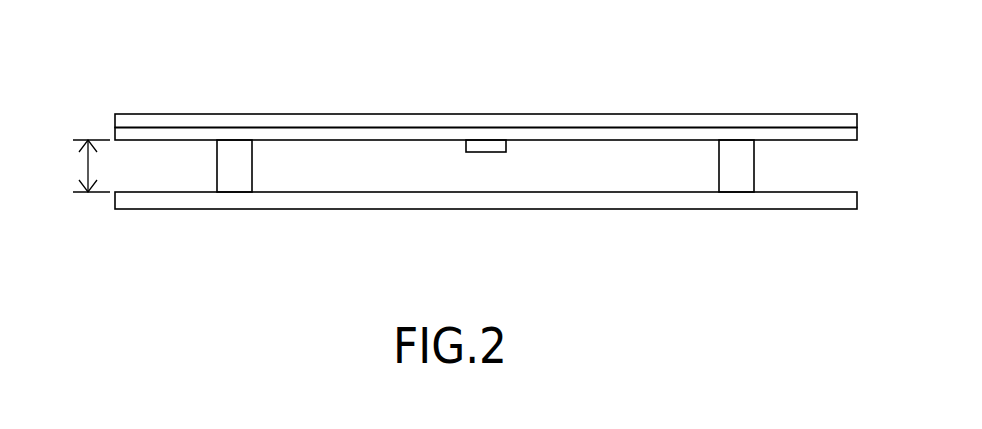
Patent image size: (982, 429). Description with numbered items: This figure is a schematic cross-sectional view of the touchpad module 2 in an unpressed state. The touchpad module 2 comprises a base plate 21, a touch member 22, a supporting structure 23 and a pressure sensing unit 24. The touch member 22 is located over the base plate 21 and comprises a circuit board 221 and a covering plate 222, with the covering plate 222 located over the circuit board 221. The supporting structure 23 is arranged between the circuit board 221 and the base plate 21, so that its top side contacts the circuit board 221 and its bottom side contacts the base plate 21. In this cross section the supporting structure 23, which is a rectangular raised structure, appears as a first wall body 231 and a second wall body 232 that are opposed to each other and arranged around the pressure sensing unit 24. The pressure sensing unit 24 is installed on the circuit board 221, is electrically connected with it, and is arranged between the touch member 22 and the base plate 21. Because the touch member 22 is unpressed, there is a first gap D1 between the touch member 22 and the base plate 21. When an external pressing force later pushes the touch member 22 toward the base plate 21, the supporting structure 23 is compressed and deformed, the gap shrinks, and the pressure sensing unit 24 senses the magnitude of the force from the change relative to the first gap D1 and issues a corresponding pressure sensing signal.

The touchpad module 2 is at (624, 23).
The base plate 21 is at (665, 200).
The touch member 22 is at (807, 70).
The circuit board 221 is at (625, 133).
The covering plate 222 is at (727, 120).
The supporting structure 23 is at (203, 17).
The first wall body 231 is at (177, 225).
The second wall body 232 is at (793, 225).
The pressure sensing unit 24 is at (486, 146).
The first gap D1 is at (74, 166).